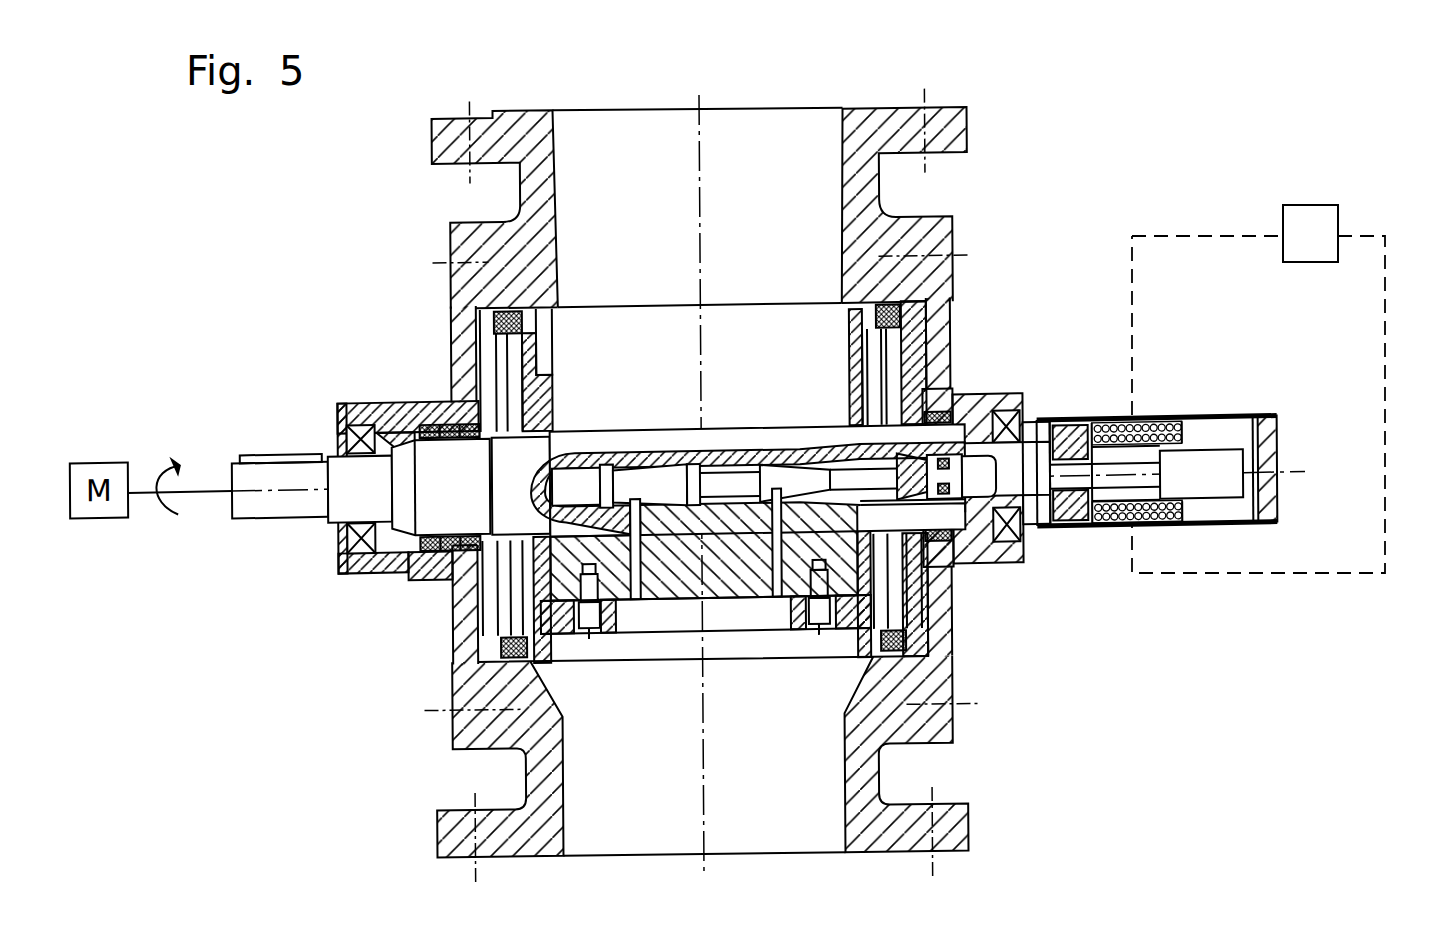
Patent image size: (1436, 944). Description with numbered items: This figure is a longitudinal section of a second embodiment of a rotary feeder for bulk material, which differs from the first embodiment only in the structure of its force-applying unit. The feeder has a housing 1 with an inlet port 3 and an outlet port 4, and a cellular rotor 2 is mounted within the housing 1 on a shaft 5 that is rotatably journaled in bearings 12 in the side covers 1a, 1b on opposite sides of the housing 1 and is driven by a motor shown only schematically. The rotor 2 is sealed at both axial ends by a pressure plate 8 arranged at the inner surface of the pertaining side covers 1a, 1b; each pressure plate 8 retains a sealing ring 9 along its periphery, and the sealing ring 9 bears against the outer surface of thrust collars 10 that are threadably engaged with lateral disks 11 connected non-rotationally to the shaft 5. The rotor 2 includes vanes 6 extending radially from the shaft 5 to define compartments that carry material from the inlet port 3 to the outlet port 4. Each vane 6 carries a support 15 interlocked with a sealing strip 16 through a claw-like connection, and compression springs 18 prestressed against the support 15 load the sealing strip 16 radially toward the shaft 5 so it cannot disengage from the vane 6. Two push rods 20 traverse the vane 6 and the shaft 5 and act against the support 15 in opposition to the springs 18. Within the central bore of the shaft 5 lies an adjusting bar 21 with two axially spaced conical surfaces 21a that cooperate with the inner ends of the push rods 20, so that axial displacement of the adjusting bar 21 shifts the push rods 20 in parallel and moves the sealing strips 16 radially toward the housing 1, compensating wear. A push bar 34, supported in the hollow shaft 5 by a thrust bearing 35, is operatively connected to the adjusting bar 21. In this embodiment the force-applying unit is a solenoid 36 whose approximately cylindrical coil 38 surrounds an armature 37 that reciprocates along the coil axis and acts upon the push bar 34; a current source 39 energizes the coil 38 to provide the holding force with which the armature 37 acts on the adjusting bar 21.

The housing 1 is at (866, 188).
The side cover 1a is at (463, 285).
The side cover 1b is at (950, 300).
The rotor 2 is at (752, 330).
The inlet port 3 is at (699, 177).
The outlet port 4 is at (625, 812).
The shaft 5 is at (342, 507).
The vane 6 is at (692, 585).
The pressure plate 8 is at (487, 374).
The sealing ring 9 is at (487, 322).
The thrust collar 10 is at (543, 323).
The lateral disk 11 is at (553, 399).
The bearing 12 is at (430, 551).
The support 15 is at (637, 607).
The sealing strip 16 is at (716, 645).
The compression spring 18 is at (590, 618).
The push rod 20 is at (780, 605).
The adjusting bar 21 is at (730, 458).
The conical surface 21a is at (655, 473).
The push bar 34 is at (1040, 527).
The thrust bearing 35 is at (978, 515).
The solenoid 36 is at (1210, 409).
The armature 37 is at (1241, 528).
The coil 38 is at (1157, 527).
The current source 39 is at (1293, 206).